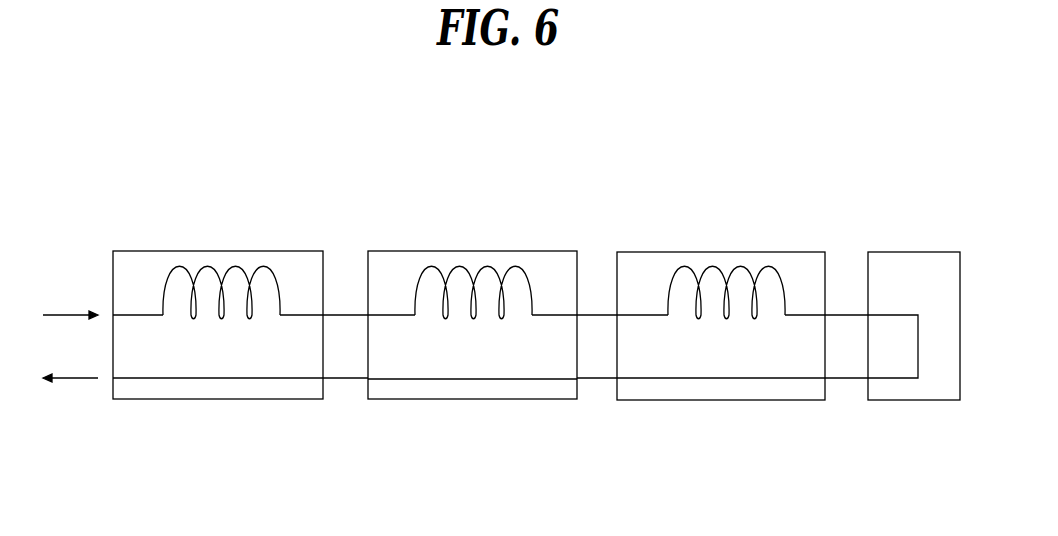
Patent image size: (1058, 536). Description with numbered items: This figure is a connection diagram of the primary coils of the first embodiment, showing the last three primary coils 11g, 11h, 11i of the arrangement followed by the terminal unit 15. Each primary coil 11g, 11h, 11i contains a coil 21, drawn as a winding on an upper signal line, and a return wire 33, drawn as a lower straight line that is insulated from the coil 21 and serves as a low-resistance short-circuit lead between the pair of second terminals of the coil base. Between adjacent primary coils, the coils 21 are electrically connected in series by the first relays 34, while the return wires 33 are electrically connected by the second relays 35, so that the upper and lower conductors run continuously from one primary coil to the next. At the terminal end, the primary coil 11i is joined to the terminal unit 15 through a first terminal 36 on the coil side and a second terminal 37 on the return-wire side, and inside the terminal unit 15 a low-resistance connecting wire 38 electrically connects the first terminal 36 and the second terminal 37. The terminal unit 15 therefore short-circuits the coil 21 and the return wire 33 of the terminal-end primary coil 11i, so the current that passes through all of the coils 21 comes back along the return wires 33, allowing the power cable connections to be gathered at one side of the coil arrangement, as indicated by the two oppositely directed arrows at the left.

The primary coil 11g is at (222, 251).
The primary coil 11h is at (472, 251).
The primary coil 11i is at (720, 251).
The terminal unit 15 is at (918, 251).
The coil 21 is at (262, 268).
The return wire 33 is at (218, 380).
The first relay 34 is at (344, 314).
The second relay 35 is at (345, 380).
The first terminal 36 is at (841, 314).
The second terminal 37 is at (841, 380).
The connecting wire 38 is at (918, 345).